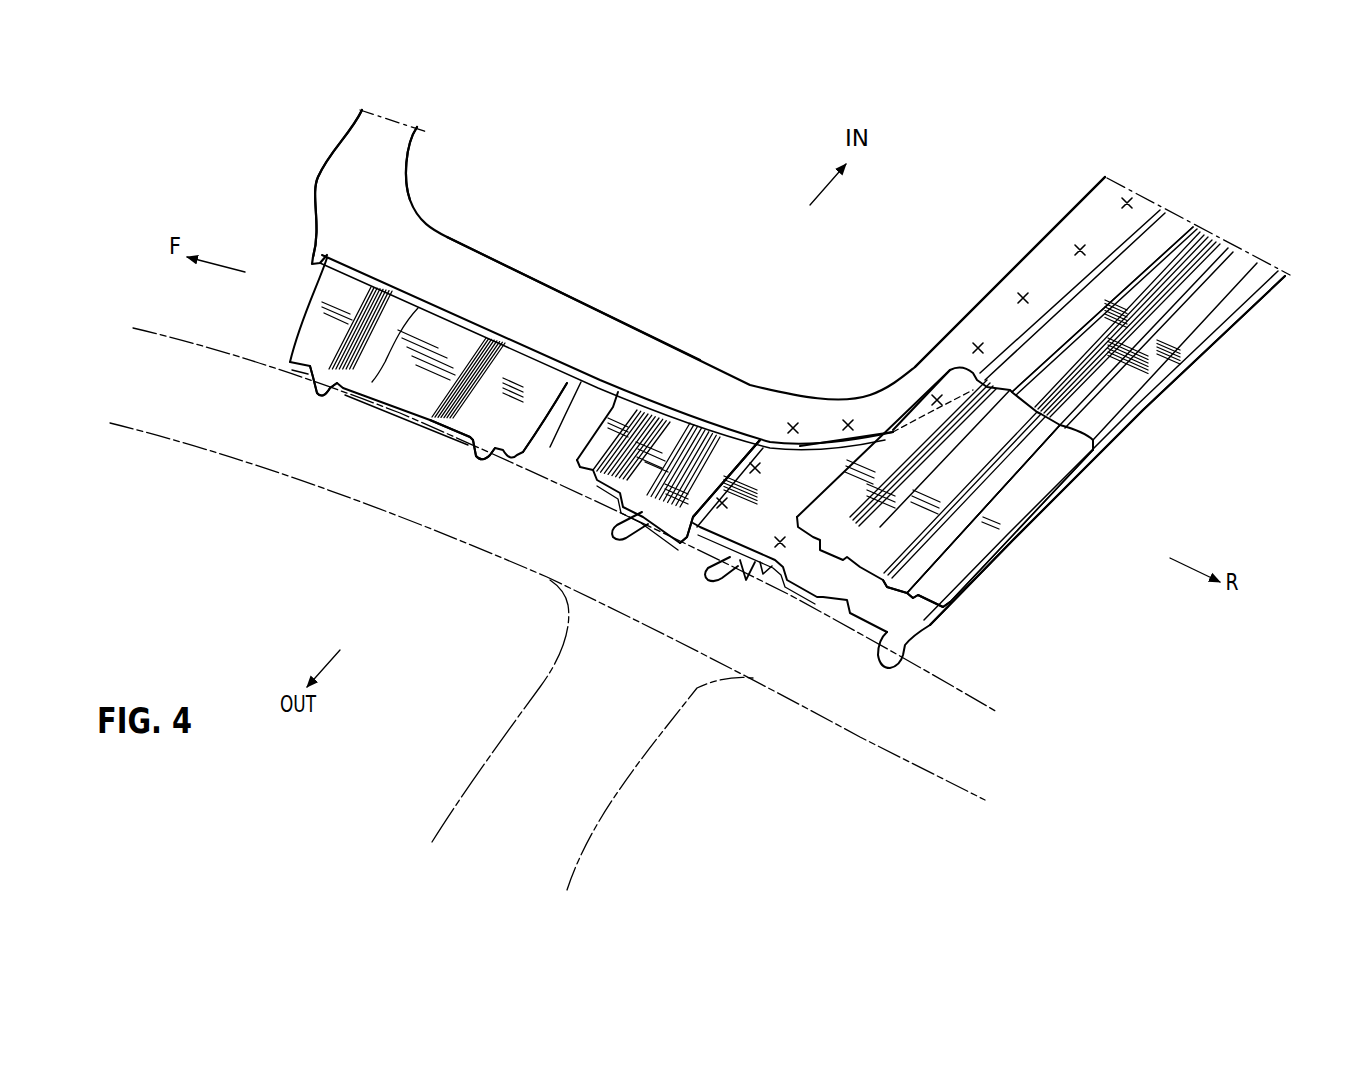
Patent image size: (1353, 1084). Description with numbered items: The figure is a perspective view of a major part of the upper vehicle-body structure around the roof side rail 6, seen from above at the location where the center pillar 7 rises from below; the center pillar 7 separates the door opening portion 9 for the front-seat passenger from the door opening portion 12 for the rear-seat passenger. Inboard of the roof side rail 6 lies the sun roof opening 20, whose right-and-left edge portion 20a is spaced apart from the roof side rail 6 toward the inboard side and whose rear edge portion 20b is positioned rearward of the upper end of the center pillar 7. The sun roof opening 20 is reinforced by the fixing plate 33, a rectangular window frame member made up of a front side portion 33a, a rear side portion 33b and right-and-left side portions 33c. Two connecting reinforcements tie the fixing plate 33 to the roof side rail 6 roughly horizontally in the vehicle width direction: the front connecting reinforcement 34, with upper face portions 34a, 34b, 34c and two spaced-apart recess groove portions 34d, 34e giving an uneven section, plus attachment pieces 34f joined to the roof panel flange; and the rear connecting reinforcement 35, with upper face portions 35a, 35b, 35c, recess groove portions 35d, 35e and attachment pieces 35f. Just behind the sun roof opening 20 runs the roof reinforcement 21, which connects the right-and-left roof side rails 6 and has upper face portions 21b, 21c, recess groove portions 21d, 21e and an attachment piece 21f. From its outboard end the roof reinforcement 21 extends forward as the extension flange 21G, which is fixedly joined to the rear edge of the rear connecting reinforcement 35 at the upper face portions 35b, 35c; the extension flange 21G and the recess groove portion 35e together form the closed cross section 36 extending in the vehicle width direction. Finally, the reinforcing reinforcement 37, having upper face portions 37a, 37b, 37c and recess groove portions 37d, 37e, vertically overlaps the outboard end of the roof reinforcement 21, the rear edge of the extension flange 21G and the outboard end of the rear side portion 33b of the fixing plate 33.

The roof side rail 6 is at (210, 449).
The center pillar 7 is at (593, 838).
The door opening portion 9 is at (413, 619).
The door opening portion 12 is at (789, 802).
The sun roof opening 20 is at (710, 172).
The right-and-left edge portion 20a is at (523, 268).
The rear edge portion 20b is at (1017, 270).
The roof reinforcement 21 is at (1162, 396).
The upper face portion 21b is at (1198, 226).
The upper face portion 21c is at (1265, 262).
The recess groove portion 21d is at (1147, 242).
The recess groove portion 21e is at (1240, 252).
The attachment piece 21f is at (900, 665).
The front-extension flange portion 21G is at (790, 488).
The fixing plate 33 is at (600, 312).
The front side portion 33a is at (362, 140).
The rear side portion 33b is at (1003, 300).
The right-and-left side portion 33c is at (460, 270).
The front connecting reinforcement 34 is at (290, 327).
The upper face portion 34a is at (350, 292).
The upper face portion 34b is at (464, 337).
The upper face portion 34c is at (540, 372).
The recess groove portion 34d is at (370, 355).
The recess groove portion 34e is at (457, 420).
The attachment piece 34f is at (302, 383).
The rear connecting reinforcement 35 is at (602, 420).
The upper face portion 35a is at (632, 413).
The upper face portion 35b is at (687, 537).
The upper face portion 35c is at (766, 574).
The recess groove portion 35d is at (728, 490).
The recess groove portion 35e is at (730, 565).
The attachment piece 35f is at (615, 505).
The closed cross section 36 is at (745, 578).
The reinforcing reinforcement 37 is at (912, 398).
The upper face portion 37a is at (953, 380).
The upper face portion 37b is at (993, 430).
The upper face portion 37c is at (1033, 493).
The recess groove portion 37d is at (853, 533).
The recess groove portion 37e is at (910, 590).